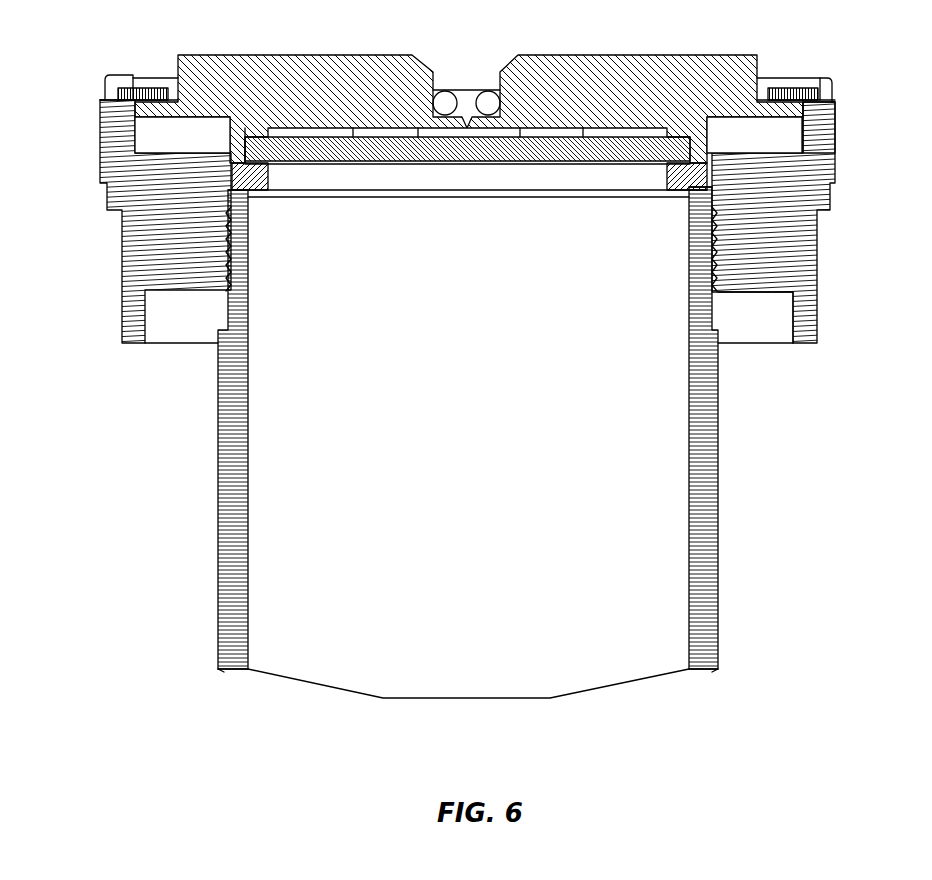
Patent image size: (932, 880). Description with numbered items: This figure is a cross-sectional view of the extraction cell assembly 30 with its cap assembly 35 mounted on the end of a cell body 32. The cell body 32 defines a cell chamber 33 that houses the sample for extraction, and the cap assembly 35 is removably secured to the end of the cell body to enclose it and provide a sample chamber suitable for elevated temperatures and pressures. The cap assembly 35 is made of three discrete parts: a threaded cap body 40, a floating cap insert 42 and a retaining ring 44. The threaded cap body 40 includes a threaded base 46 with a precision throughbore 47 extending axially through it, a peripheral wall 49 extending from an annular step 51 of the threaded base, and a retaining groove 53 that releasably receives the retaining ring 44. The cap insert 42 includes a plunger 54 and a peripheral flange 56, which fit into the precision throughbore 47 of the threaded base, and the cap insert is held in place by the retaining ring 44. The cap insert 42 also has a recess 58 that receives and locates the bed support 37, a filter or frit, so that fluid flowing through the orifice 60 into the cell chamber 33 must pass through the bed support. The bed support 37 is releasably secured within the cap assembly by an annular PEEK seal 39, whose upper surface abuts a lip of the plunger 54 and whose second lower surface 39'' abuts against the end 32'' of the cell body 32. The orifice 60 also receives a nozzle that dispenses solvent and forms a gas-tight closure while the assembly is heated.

The extraction cell assembly 30 is at (108, 362).
The cell body 32 is at (508, 442).
The end of the cell body 32'' is at (666, 222).
The cell chamber 33 is at (250, 478).
The cap assembly 35 is at (832, 73).
The bed support 37 is at (430, 150).
The seal 39 is at (273, 201).
The second lower surface of the seal 39'' is at (655, 198).
The threaded cap body 40 is at (835, 163).
The floating cap insert 42 is at (320, 55).
The retaining ring 44 is at (780, 93).
The threaded base 46 is at (760, 262).
The precision throughbore 47 is at (245, 197).
The peripheral wall 49 is at (818, 123).
The annular step 51 is at (193, 152).
The retaining groove 53 is at (145, 90).
The plunger 54 is at (247, 132).
The peripheral flange 56 is at (768, 110).
The recess 58 is at (262, 140).
The orifice 60 is at (470, 126).